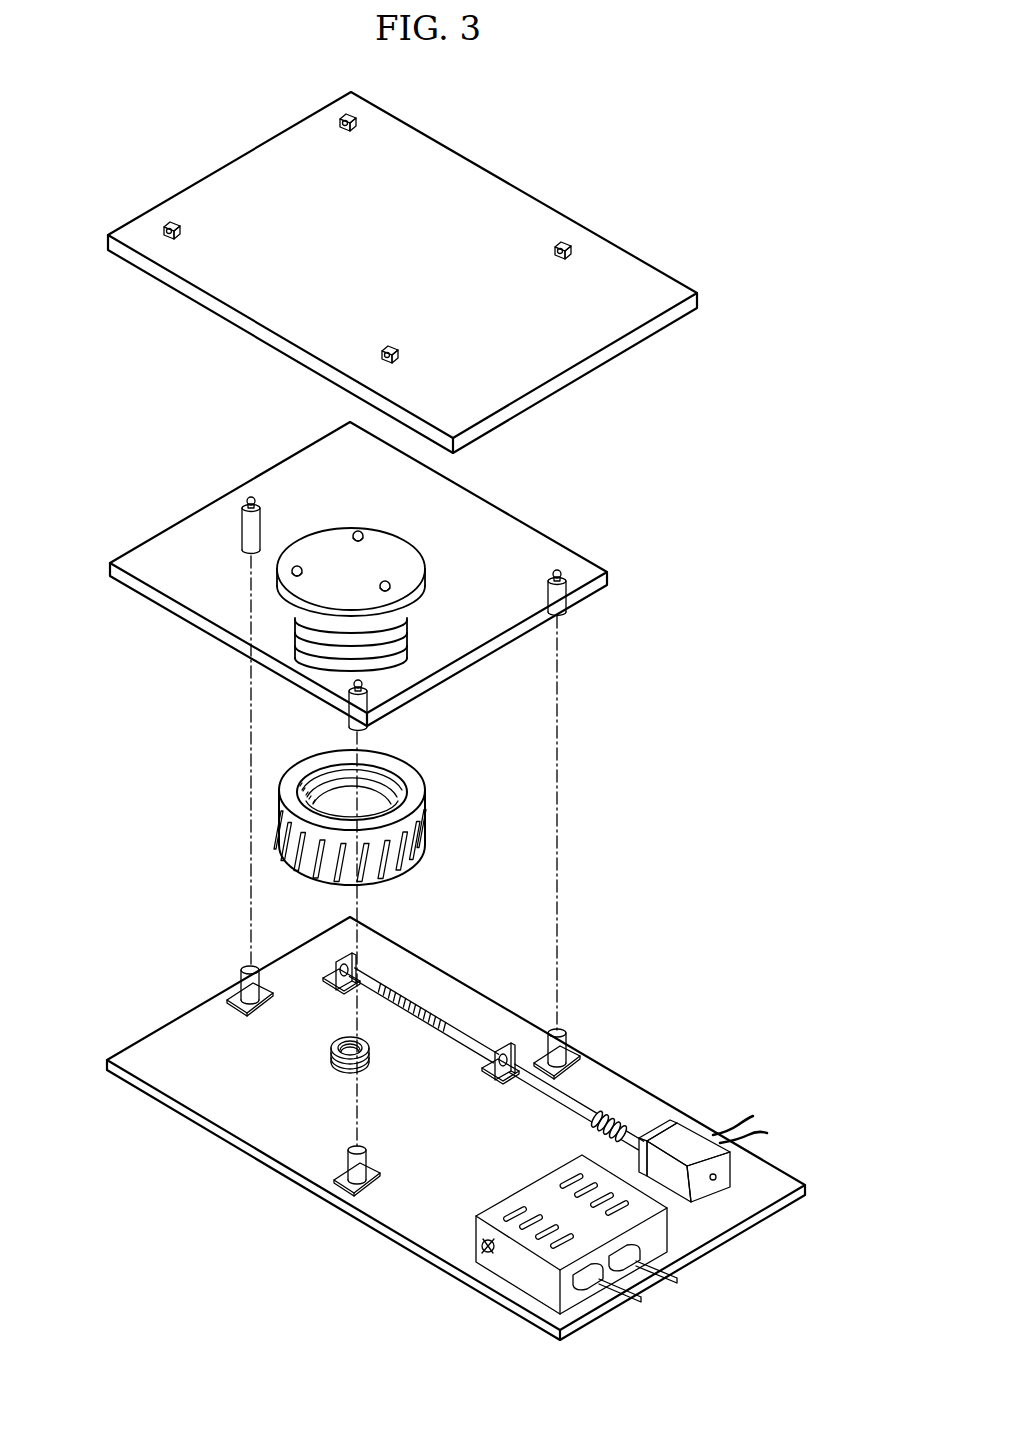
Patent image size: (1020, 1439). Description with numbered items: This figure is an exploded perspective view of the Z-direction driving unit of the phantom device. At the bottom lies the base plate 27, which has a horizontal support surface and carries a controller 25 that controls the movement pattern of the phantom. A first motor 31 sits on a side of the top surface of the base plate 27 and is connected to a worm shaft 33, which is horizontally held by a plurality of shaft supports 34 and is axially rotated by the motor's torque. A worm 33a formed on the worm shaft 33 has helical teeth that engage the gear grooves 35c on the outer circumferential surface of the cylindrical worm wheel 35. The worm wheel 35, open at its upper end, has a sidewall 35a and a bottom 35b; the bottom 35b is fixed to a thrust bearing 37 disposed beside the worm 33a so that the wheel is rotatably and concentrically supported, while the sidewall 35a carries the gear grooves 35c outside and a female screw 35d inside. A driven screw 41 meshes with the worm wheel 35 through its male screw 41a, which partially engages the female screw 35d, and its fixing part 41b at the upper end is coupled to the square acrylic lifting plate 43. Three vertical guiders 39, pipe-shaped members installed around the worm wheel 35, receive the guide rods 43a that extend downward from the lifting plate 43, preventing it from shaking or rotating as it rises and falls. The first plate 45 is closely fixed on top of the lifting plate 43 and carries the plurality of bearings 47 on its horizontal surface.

The controller 25 is at (655, 1238).
The base plate 27 is at (397, 1233).
The first motor 31 is at (695, 1140).
The worm shaft 33 is at (523, 1031).
The worm 33a is at (422, 1005).
The shaft support 34 is at (340, 960).
The worm wheel 35 is at (345, 802).
The sidewall 35a is at (277, 810).
The bottom 35b is at (372, 818).
The gear grooves 35c is at (405, 855).
The female screw 35d is at (302, 768).
The bearing 37 is at (328, 1050).
The vertical guider 39 is at (570, 1043).
The driven screw 41 is at (392, 595).
The male screw 41a is at (400, 655).
The fixing part 41b is at (410, 571).
The lifting plate 43 is at (170, 598).
The guide rod 43a is at (248, 528).
The first plate 45 is at (583, 343).
The bearing 47 is at (566, 240).